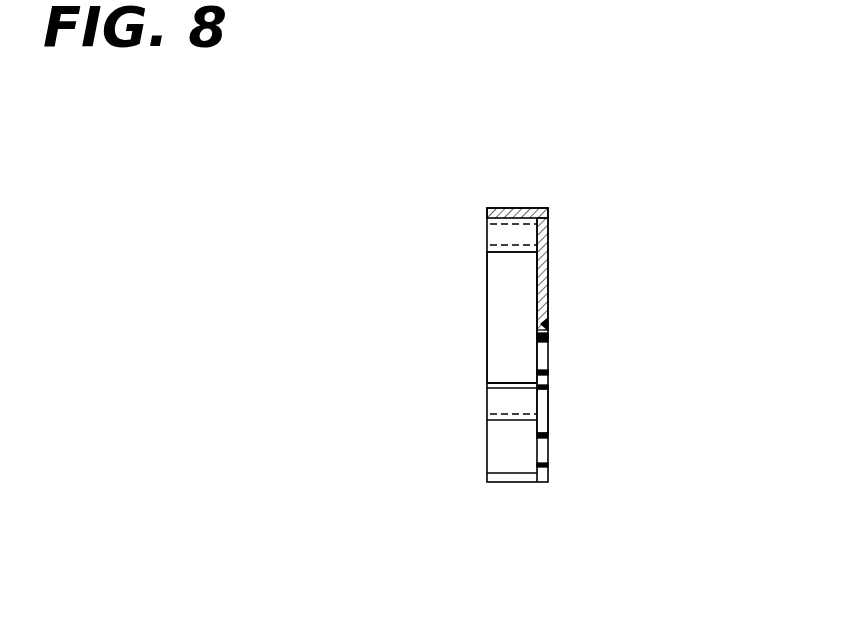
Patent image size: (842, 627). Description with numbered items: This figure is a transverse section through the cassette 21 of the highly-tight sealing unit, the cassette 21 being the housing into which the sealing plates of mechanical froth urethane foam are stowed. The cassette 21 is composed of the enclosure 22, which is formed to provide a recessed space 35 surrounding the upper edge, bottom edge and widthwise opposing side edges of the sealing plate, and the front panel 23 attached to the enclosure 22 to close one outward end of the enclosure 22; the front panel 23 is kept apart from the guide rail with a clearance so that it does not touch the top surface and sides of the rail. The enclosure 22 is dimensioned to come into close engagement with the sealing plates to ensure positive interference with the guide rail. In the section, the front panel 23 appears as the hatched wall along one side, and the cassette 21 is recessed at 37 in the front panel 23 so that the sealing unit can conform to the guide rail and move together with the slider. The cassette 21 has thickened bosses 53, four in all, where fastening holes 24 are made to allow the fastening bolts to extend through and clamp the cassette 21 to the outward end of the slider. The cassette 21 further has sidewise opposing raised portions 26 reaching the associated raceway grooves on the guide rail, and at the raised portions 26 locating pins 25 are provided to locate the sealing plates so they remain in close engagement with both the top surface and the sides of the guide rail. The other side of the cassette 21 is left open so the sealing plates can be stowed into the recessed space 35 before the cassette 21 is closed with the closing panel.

The cassette 21 is at (592, 223).
The enclosure 22 is at (516, 208).
The front panel 23 is at (546, 282).
The fastening holes 24 is at (512, 243).
The locating pins 25 is at (497, 413).
The raised portions 26 is at (542, 411).
The recessed space 35 is at (502, 319).
The recess 37 is at (550, 331).
The thickened bosses 53 is at (517, 251).